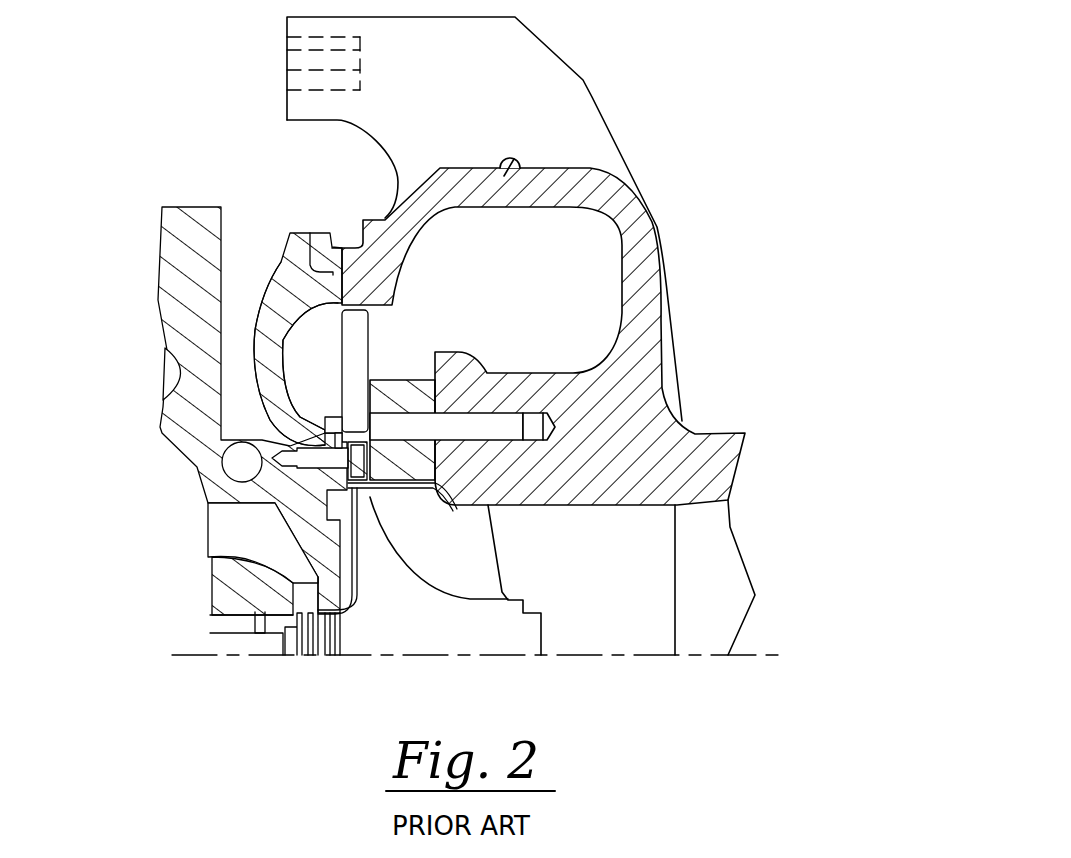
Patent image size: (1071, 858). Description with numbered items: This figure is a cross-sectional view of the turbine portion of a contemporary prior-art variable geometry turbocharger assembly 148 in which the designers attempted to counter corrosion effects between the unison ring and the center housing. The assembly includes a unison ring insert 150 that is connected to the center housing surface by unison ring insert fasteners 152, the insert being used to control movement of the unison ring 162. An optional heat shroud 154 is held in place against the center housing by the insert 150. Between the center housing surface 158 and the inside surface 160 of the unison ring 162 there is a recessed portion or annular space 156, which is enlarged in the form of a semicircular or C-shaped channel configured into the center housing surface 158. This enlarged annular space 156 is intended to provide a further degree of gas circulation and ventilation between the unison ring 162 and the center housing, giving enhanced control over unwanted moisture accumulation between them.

The variable geometry turbocharger assembly 148 is at (636, 108).
The unison ring insert 150 is at (335, 438).
The unison ring insert fasteners 152 is at (362, 465).
The heat shroud 154 is at (356, 551).
The annular space 156 is at (298, 337).
The center housing surface 158 is at (305, 343).
The inside surface 160 is at (287, 250).
The unison ring 162 is at (357, 355).